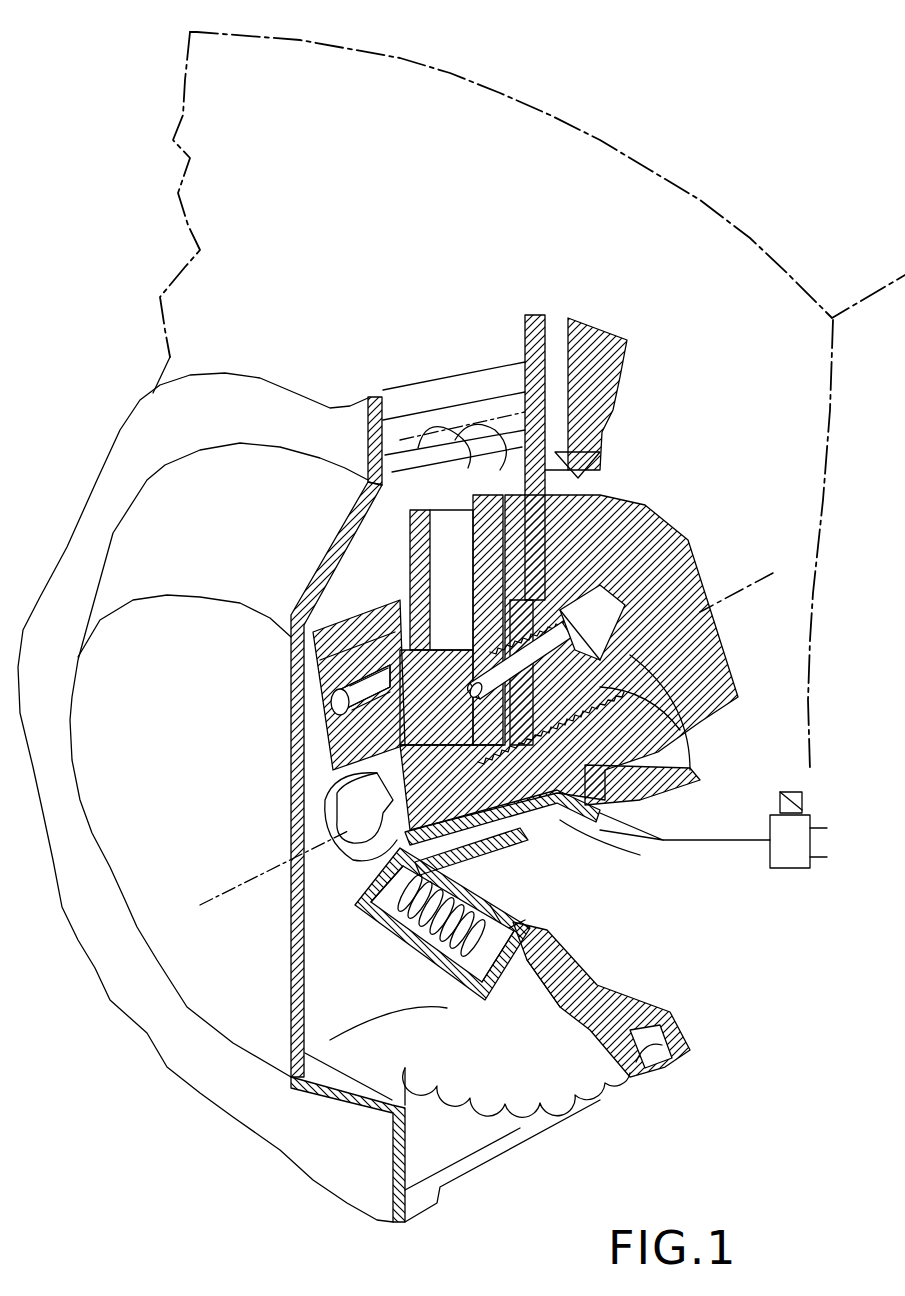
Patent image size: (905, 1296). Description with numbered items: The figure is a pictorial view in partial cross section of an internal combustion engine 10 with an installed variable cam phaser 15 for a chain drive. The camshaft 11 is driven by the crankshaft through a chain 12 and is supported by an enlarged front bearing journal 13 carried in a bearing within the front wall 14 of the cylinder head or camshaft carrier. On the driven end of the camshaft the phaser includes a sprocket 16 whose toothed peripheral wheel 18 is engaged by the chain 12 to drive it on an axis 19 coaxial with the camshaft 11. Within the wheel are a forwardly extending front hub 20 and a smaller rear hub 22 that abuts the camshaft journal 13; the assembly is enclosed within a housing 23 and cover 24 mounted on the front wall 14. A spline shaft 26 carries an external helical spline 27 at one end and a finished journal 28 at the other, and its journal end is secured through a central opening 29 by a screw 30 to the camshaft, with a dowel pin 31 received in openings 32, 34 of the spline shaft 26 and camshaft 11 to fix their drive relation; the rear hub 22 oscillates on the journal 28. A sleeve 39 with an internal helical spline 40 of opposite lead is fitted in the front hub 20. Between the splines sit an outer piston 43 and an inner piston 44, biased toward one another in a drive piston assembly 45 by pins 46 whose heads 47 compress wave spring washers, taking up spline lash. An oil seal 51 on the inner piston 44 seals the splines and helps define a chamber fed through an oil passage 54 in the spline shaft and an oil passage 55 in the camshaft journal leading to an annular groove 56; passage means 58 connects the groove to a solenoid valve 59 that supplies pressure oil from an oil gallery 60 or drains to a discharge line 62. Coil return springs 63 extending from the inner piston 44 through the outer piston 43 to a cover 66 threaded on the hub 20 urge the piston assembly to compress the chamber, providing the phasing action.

The internal combustion engine 10 is at (160, 272).
The camshaft 11 is at (655, 514).
The chain 12 is at (607, 467).
The front bearing journal 13 is at (643, 810).
The front wall 14 is at (600, 430).
The variable cam phaser 15 is at (612, 985).
The sprocket 16 is at (632, 1072).
The wheel 18 is at (682, 1013).
The axis 19 is at (762, 598).
The front hub 20 is at (450, 1008).
The rear hub 22 is at (605, 842).
The housing 23 is at (527, 362).
The cover 24 is at (352, 437).
The spline shaft 26 is at (300, 927).
The external helical spline 27 is at (293, 963).
The journal 28 is at (523, 845).
The central opening 29 is at (335, 795).
The screw 30 is at (670, 718).
The dowel pin 31 is at (480, 600).
The opening 32 is at (472, 680).
The opening 34 is at (607, 598).
The sleeve 39 is at (487, 962).
The internal helical spline 40 is at (557, 930).
The outer piston 43 is at (410, 977).
The inner piston 44 is at (490, 912).
The drive piston assembly 45 is at (293, 707).
The pins 46 is at (293, 742).
The heads 47 is at (293, 753).
The oil seal 51 is at (350, 638).
The oil passage 54 is at (530, 880).
The oil passage 55 is at (668, 775).
The annular groove 56 is at (565, 530).
The passage means 58 is at (695, 843).
The solenoid valve 59 is at (770, 830).
The oil gallery 60 is at (817, 828).
The discharge line 62 is at (820, 862).
The coil return springs 63 is at (385, 945).
The cover 66 is at (437, 1053).